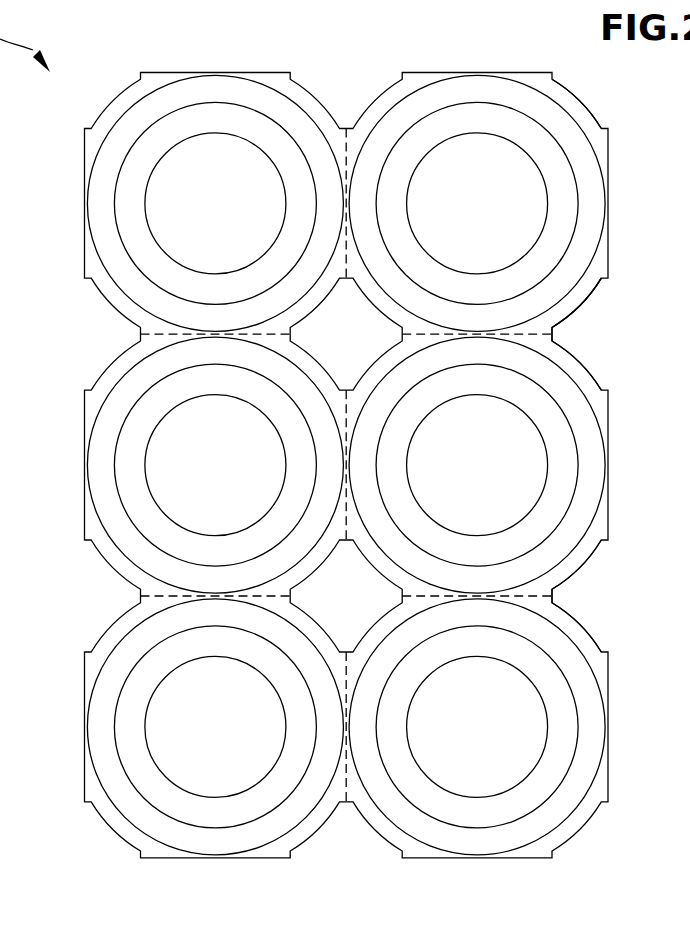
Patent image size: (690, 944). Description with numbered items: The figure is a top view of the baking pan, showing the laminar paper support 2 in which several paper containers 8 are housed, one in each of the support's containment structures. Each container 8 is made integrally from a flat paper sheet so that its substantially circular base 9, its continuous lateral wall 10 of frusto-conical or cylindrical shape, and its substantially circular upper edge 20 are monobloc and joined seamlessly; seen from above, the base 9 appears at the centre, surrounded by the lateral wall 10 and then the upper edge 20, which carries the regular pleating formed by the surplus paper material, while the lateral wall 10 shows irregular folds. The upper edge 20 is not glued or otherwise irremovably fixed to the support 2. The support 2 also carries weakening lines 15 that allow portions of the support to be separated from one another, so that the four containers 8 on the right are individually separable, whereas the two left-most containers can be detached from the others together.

The support 2 is at (388, 64).
The container 8 is at (554, 174).
The base 9 is at (486, 742).
The lateral wall 10 is at (125, 213).
The weakening lines 15 is at (557, 317).
The upper edge 20 is at (585, 224).